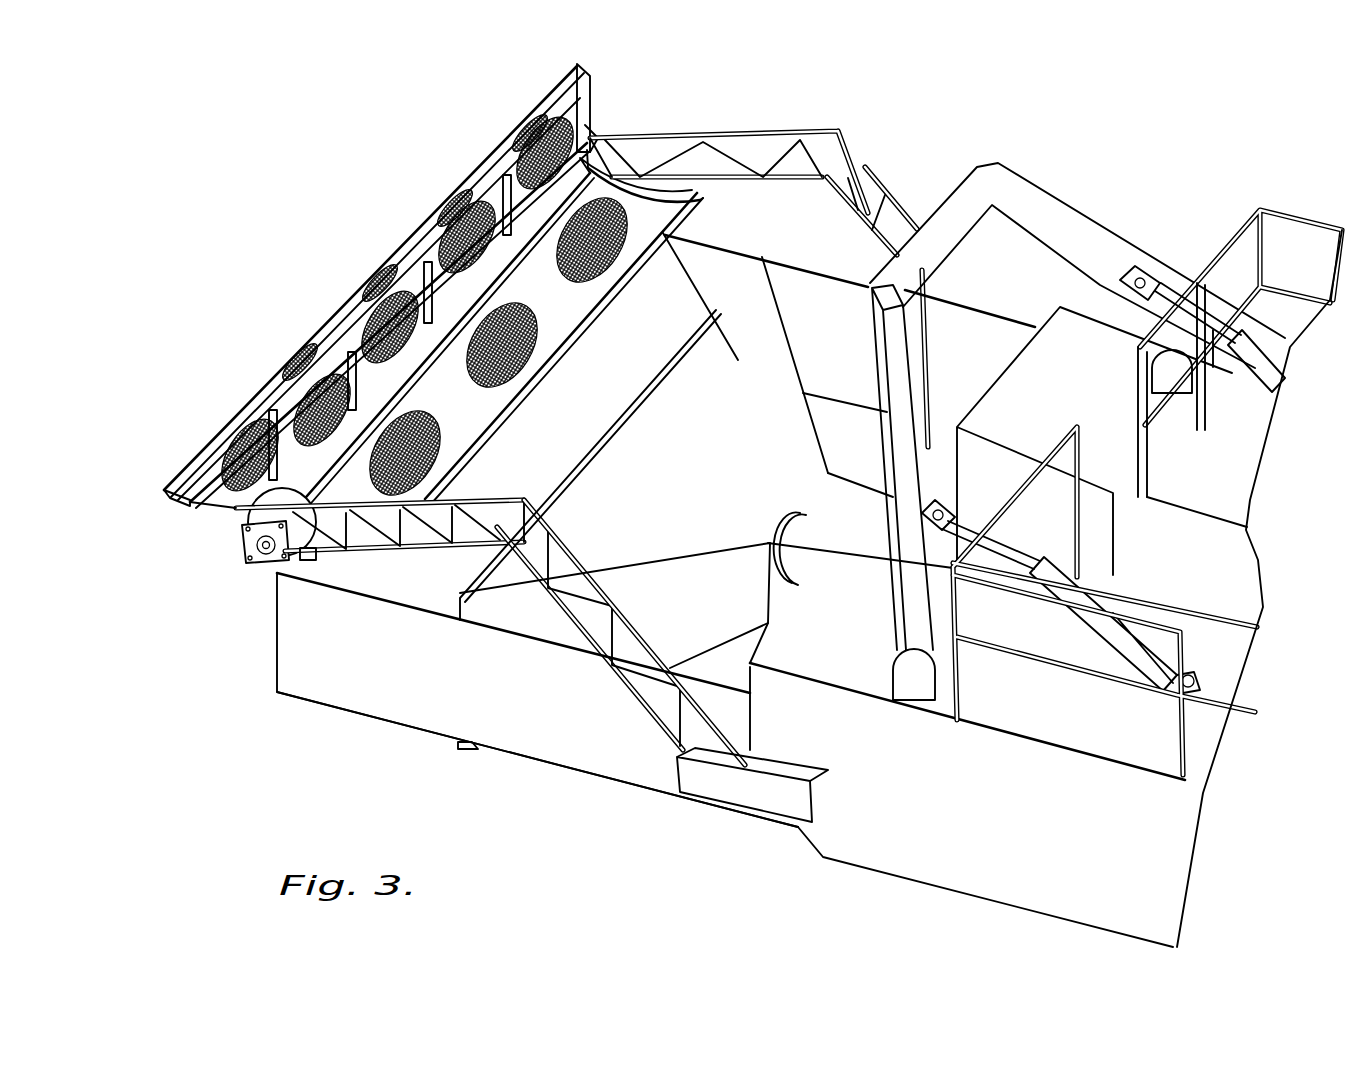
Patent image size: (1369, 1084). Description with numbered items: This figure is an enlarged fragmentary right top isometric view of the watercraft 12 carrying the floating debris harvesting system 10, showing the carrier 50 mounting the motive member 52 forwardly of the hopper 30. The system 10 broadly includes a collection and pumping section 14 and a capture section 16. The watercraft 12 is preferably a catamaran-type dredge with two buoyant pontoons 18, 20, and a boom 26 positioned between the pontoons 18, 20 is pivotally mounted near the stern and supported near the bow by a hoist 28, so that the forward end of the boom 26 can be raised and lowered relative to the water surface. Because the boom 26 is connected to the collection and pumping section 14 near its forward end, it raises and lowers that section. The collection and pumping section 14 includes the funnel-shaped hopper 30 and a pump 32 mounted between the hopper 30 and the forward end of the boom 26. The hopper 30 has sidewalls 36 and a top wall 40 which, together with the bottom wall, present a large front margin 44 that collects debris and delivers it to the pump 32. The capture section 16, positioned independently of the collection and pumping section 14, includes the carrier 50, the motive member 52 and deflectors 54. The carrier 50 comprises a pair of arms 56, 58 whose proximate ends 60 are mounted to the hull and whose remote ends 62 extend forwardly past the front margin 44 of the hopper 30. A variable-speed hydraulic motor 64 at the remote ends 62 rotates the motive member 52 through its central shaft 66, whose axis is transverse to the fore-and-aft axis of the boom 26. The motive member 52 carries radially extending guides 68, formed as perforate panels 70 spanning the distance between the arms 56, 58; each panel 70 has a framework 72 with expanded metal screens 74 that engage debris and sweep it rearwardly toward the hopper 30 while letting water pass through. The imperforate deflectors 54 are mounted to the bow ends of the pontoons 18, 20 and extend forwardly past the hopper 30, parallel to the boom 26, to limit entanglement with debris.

The floating debris harvesting system 10 is at (167, 623).
The watercraft 12 is at (856, 878).
The collection and pumping section 14 is at (864, 482).
The capture section 16 is at (688, 132).
The pontoon 18 is at (1077, 333).
The pontoon 20 is at (1063, 898).
The boom 26 is at (947, 567).
The hoist 28 is at (1033, 203).
The hopper 30 is at (520, 612).
The pump 32 is at (853, 513).
The sidewalls 36 is at (653, 607).
The top wall 40 is at (643, 447).
The front margin 44 is at (587, 444).
The carrier 50 is at (640, 710).
The motive member 52 is at (233, 422).
The deflectors 54 is at (787, 280).
The arm 56 is at (863, 150).
The arm 58 is at (550, 530).
The proximate ends 60 is at (720, 783).
The remote ends 62 is at (593, 130).
The hydraulic motor 64 is at (250, 553).
The central shaft 66 is at (582, 177).
The guides 68 is at (590, 78).
The perforate panels 70 is at (543, 127).
The framework 72 is at (428, 285).
The expanded metal screens 74 is at (470, 237).